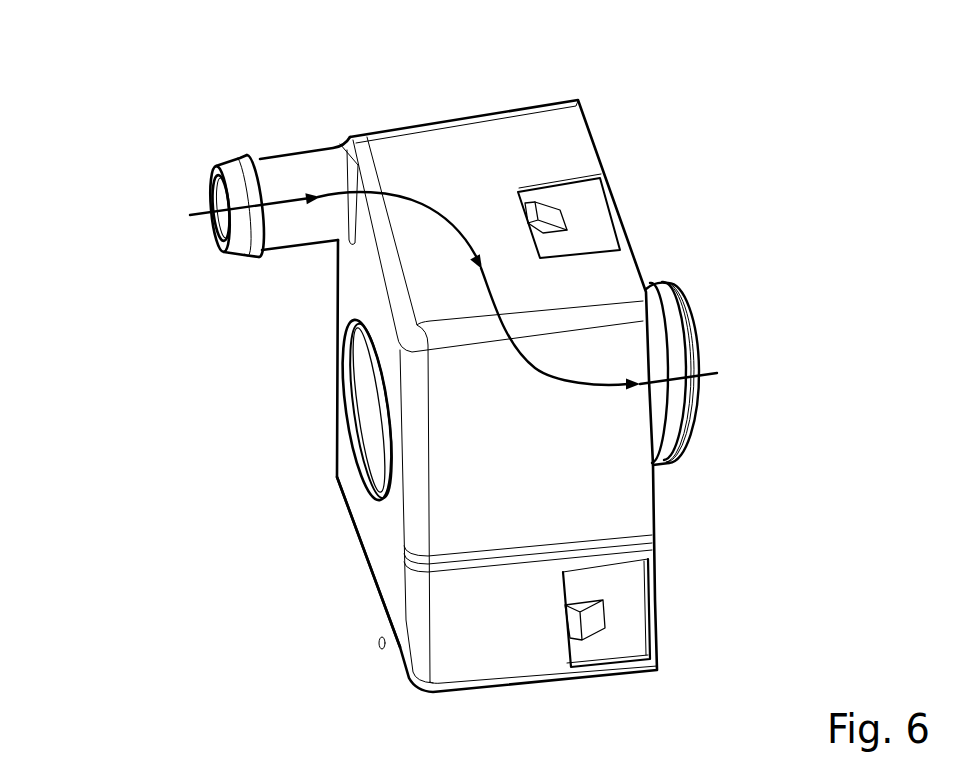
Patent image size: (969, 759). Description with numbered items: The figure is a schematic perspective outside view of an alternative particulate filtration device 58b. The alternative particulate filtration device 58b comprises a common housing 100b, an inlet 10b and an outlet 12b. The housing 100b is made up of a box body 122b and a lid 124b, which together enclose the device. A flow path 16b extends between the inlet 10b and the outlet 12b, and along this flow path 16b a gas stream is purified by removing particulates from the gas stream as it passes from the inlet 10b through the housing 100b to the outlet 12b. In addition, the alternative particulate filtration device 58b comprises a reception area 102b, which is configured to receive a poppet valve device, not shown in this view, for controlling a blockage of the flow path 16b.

The inlet 10b is at (169, 217).
The flow path 16b is at (434, 194).
The common housing 100b is at (531, 150).
The alternative particulate filtration device 58b is at (713, 172).
The outlet 12b is at (727, 373).
The lid 124b is at (687, 508).
The reception area 102b is at (368, 412).
The box body 122b is at (377, 536).